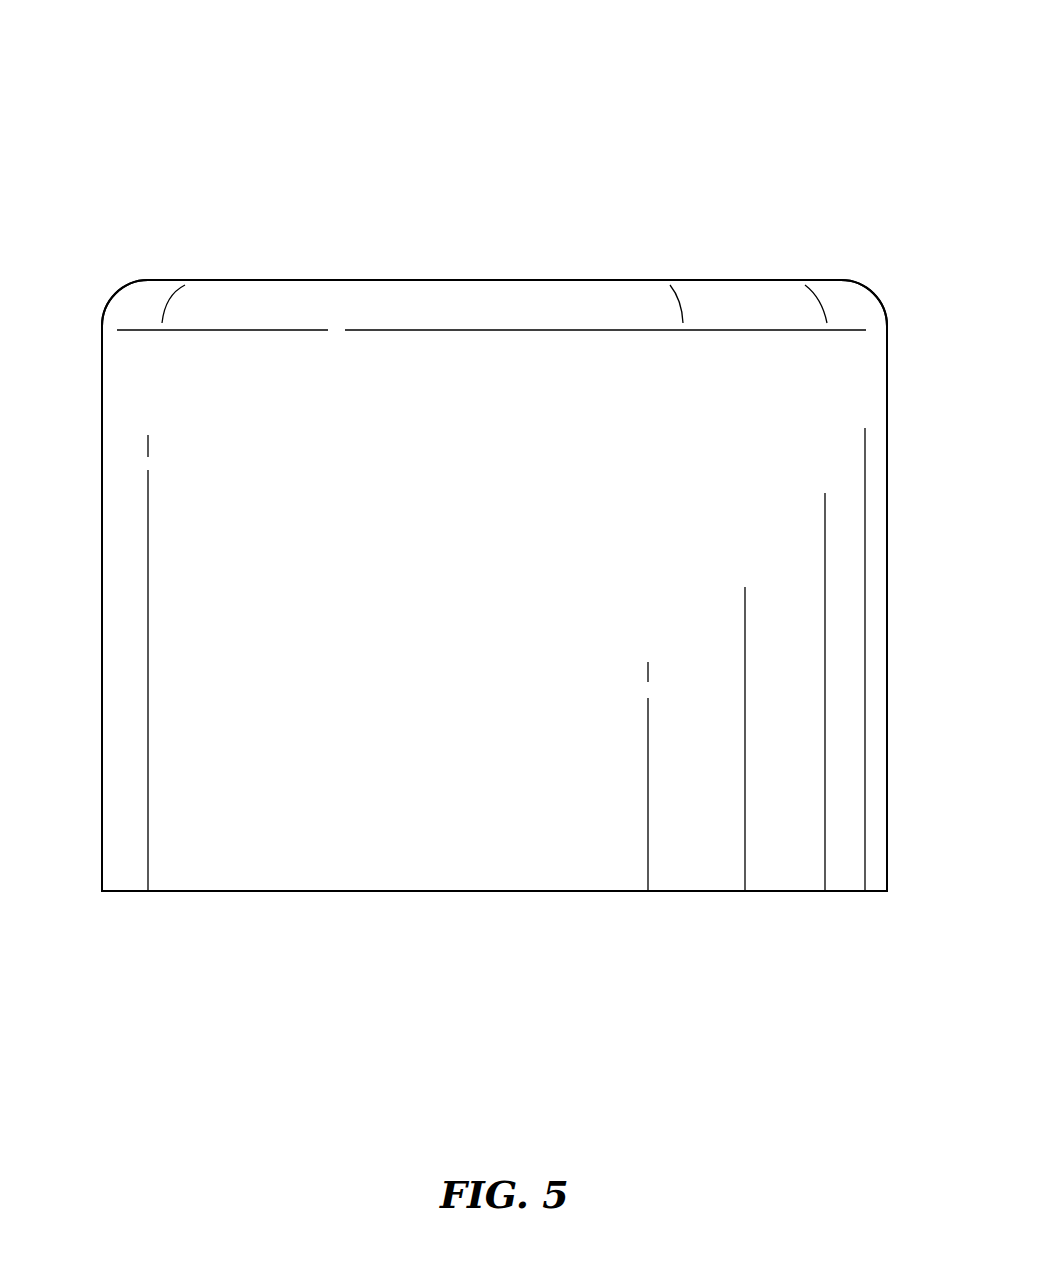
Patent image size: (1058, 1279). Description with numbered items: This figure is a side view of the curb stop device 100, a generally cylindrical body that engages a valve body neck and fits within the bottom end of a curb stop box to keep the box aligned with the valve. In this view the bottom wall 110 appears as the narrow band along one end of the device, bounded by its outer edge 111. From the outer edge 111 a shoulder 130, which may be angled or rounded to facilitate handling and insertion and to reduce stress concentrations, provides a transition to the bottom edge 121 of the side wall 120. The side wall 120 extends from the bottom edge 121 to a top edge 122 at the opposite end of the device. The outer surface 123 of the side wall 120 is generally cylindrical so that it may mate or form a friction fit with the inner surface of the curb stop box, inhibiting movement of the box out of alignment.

The curb stop device 100 is at (163, 66).
The bottom wall 110 is at (770, 279).
The outer edge 111 is at (141, 280).
The side wall 120 is at (843, 470).
The bottom edge 121 is at (133, 330).
The top edge 122 is at (602, 891).
The outer surface 123 is at (427, 620).
The shoulder 130 is at (113, 298).